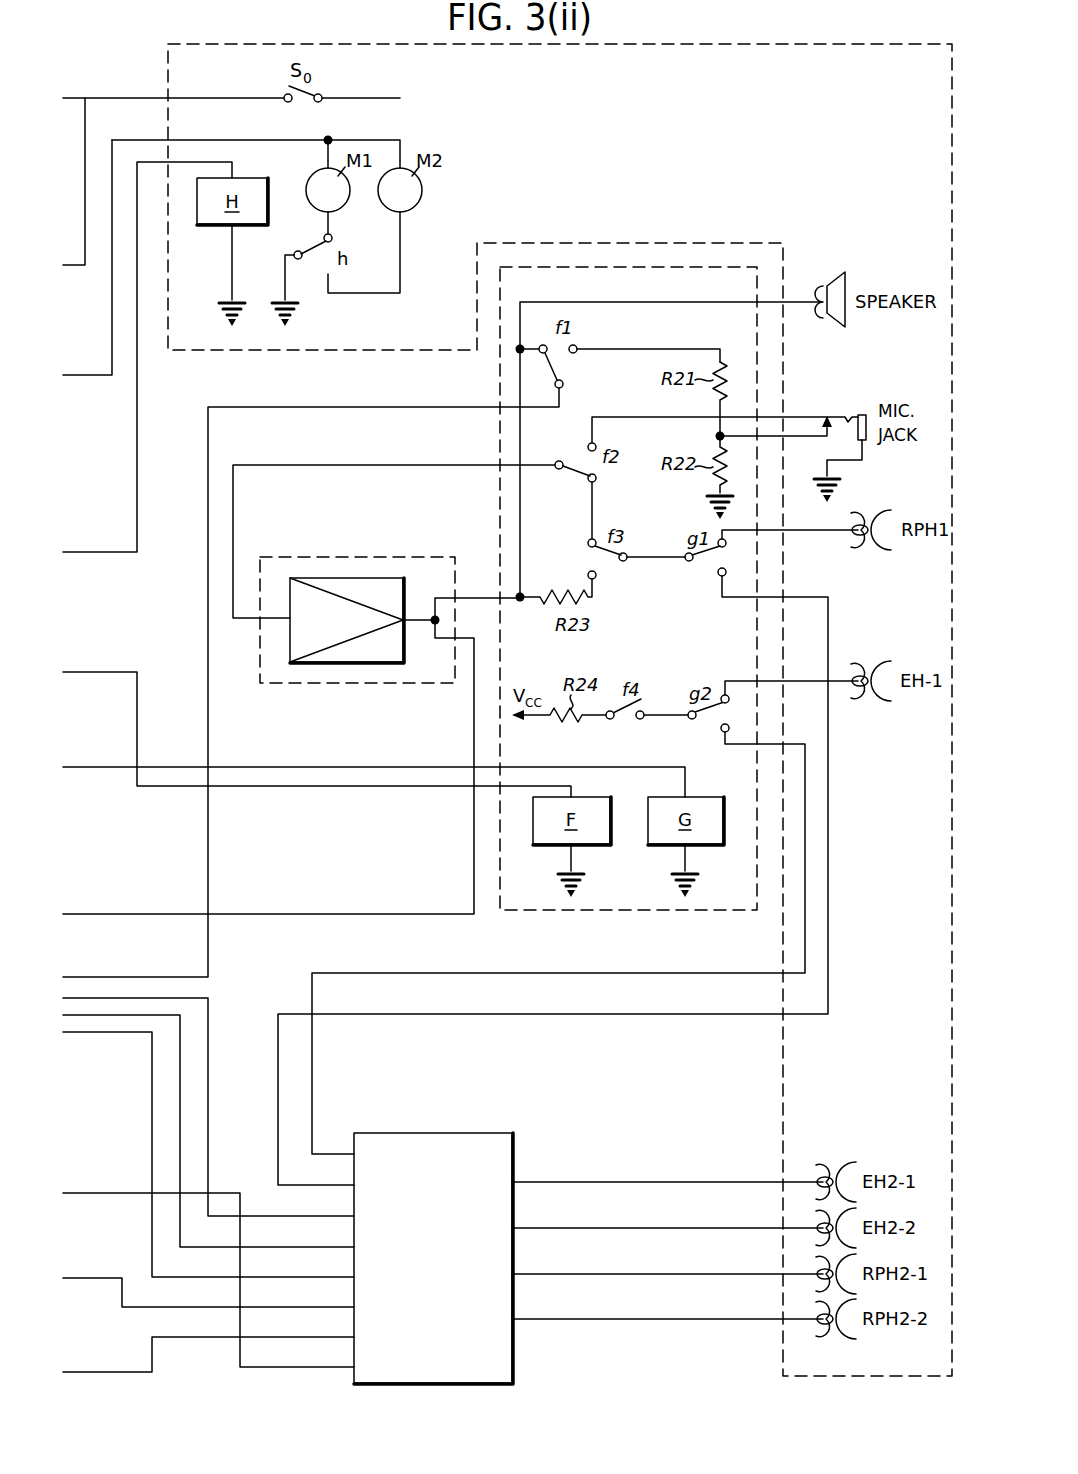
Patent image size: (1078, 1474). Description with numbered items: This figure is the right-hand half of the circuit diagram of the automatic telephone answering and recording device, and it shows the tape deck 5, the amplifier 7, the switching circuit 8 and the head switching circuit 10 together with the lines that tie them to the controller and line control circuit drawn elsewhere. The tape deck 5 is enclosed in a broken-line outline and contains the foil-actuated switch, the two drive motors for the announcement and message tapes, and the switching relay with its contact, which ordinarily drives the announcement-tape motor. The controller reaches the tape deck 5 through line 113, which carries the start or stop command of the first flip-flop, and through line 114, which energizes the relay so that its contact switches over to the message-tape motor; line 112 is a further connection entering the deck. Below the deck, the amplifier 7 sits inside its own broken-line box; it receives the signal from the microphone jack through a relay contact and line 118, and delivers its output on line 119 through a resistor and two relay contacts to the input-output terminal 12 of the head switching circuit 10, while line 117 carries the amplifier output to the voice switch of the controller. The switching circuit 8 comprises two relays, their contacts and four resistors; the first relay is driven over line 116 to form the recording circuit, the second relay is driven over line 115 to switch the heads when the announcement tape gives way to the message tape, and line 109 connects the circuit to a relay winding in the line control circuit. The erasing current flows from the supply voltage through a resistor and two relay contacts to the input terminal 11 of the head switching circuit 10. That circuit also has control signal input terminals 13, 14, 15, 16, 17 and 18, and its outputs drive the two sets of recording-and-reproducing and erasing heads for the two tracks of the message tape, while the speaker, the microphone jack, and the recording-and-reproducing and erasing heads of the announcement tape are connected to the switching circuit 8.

The tape deck 5 is at (639, 133).
The amplifier 7 is at (320, 686).
The switching circuit 8 is at (618, 912).
The head switching circuit 10 is at (507, 1163).
The input terminal for the erasing current 11 is at (352, 1153).
The input-output terminal for the recording and reproducing signals 12 is at (352, 1184).
The control signal input terminal 13 is at (352, 1215).
The control signal input terminal 14 is at (352, 1246).
The control signal input terminal 15 is at (352, 1276).
The control signal input terminal 16 is at (352, 1306).
The control signal input terminal 17 is at (350, 1336).
The control signal input terminal 18 is at (350, 1366).
The line 109 is at (88, 977).
The line 112 is at (84, 266).
The line 113 is at (100, 378).
The line 114 is at (136, 471).
The line 115 is at (101, 768).
The line 116 is at (86, 672).
The line 117 is at (136, 914).
The line 118 is at (366, 467).
The line 119 is at (478, 598).